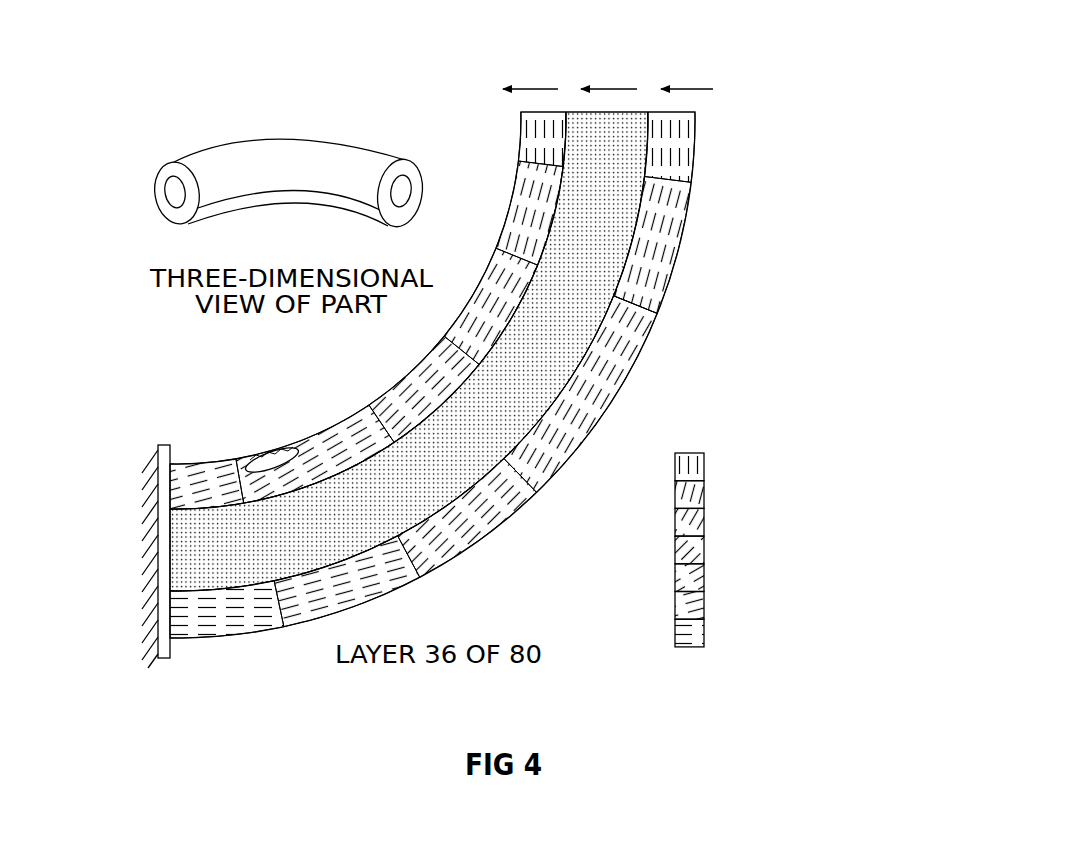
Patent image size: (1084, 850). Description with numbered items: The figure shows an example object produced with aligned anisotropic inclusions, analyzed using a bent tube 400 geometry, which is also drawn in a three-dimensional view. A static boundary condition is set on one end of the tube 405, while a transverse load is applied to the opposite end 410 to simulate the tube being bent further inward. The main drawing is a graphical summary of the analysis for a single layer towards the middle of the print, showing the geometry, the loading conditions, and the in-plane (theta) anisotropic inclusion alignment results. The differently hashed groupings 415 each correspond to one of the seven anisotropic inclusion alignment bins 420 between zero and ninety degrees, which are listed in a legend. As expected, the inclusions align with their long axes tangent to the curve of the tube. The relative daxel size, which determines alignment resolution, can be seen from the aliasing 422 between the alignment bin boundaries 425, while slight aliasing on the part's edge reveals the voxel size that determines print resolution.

The bent tube 400 is at (316, 177).
The tube end with static boundary condition 405 is at (133, 561).
The opposite end 410 is at (473, 356).
The hashed groupings 415 is at (734, 508).
The anisotropic inclusion alignment bins 420 is at (668, 454).
The aliasing 422 is at (268, 451).
The alignment bin boundaries 425 is at (473, 357).